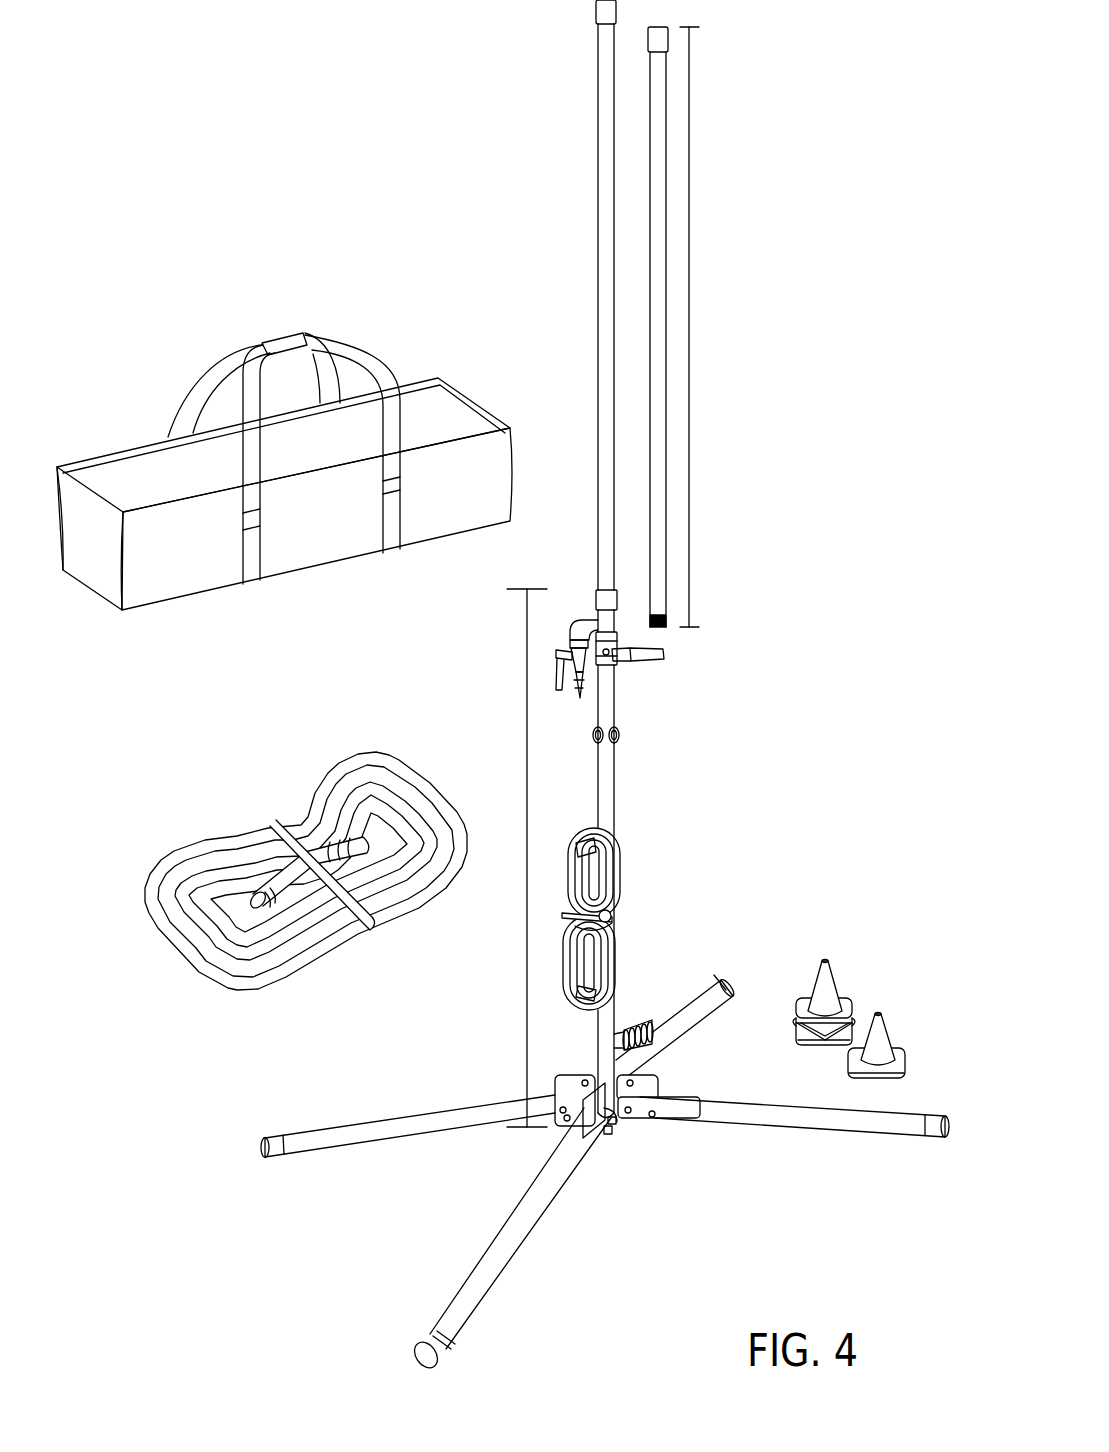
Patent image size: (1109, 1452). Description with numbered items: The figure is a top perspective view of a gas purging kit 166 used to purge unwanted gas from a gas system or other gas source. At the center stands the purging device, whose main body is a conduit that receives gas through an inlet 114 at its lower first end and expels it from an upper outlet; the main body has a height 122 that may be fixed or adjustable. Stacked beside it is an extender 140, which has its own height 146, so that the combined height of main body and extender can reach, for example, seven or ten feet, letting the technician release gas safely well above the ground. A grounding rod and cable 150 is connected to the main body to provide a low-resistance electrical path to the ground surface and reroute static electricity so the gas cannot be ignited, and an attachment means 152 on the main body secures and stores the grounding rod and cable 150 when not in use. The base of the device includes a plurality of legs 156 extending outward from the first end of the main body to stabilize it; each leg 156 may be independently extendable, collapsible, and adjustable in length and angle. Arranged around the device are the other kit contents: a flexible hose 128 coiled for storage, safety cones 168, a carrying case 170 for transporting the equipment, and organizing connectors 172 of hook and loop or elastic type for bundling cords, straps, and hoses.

The inlet 114 is at (638, 1028).
The height 122 is at (527, 680).
The flexible hose 128 is at (310, 958).
The extender 140 is at (650, 193).
The height 146 is at (689, 328).
The grounding rod and cable 150 is at (605, 892).
The attachment means 152 is at (597, 855).
The legs 156 is at (388, 1140).
The gas purging kit 166 is at (816, 492).
The safety cones 168 is at (825, 958).
The carrying case 170 is at (412, 385).
The organizing connectors 172 is at (273, 823).